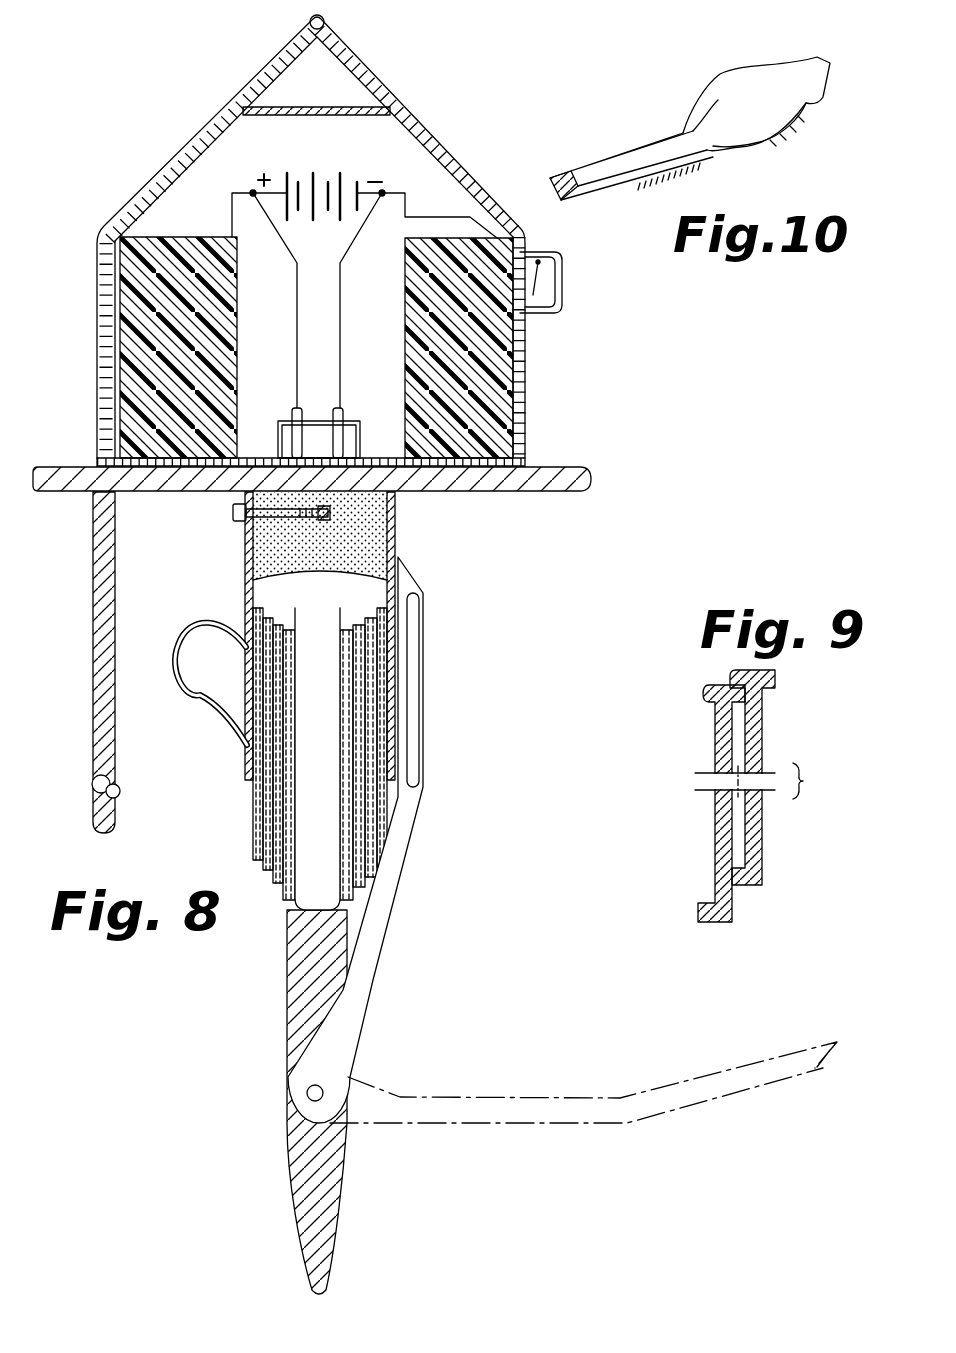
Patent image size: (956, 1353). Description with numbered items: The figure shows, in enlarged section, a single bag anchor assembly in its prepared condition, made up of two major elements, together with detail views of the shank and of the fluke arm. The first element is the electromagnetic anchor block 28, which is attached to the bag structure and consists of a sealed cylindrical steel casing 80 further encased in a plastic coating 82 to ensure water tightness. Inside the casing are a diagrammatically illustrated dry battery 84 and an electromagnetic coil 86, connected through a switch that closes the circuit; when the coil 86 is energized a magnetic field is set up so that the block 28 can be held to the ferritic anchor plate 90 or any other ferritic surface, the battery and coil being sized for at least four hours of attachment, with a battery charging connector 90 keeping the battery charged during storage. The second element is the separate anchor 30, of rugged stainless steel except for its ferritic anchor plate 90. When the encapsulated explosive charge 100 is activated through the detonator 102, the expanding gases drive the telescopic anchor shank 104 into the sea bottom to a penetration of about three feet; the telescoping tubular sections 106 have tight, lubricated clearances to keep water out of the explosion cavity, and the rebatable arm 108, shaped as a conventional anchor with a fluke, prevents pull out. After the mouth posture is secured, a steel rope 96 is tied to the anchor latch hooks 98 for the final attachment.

In FIG. 8, the electromagnetic anchor block 28 is at (607, 384).
In FIG. 8, the separate anchor 30 is at (432, 789).
In FIG. 8, the cylindrical steel casing 80 is at (313, 118).
In FIG. 8, the plastic coating 82 is at (283, 106).
In FIG. 8, the dry battery 84 is at (330, 186).
In FIG. 8, the electromagnetic coil 86 is at (556, 280).
In FIG. 8, the anchor plate 90 is at (290, 406).
In FIG. 8, the steel rope 96 is at (100, 678).
In FIG. 8, the anchor latch hook 98 is at (197, 630).
In FIG. 8, the encapsulated explosive charge 100 is at (396, 547).
In FIG. 8, the detonator 102 is at (240, 528).
In FIG. 8, the telescopic anchor shank 104 is at (322, 1207).
In FIG. 8, the telescoping tubular sections 106 is at (253, 818).
In FIG. 9, the telescoping tubular sections 106 is at (762, 830).
In FIG. 8, the rebatable arm 108 is at (393, 858).
In FIG. 10, the rebatable arm 108 is at (703, 97).